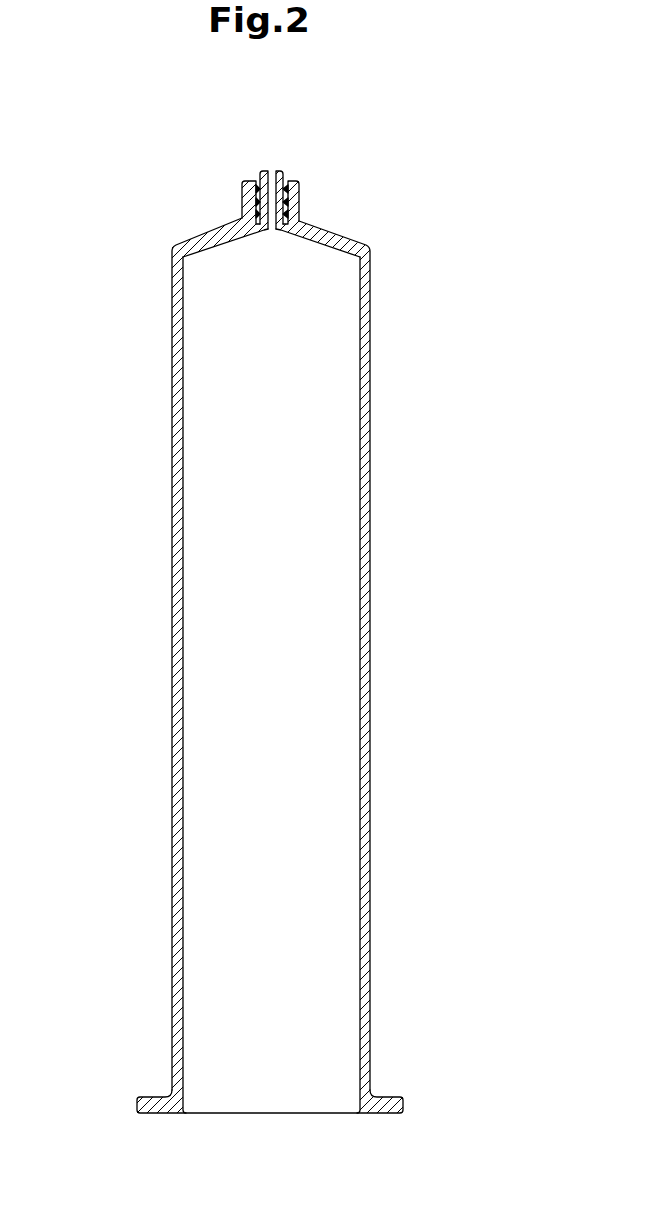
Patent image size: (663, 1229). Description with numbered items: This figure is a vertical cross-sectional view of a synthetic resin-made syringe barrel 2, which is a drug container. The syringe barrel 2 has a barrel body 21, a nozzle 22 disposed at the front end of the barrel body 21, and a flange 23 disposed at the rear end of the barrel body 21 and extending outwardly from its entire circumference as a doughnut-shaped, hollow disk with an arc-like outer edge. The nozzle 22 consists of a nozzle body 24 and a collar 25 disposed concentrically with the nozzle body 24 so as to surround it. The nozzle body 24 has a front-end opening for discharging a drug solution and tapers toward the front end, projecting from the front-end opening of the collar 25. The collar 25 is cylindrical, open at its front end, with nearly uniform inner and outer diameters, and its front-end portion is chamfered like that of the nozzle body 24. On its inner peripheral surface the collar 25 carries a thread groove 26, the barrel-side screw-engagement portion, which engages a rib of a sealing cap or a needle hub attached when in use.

The syringe barrel 2 is at (295, 632).
The barrel body 21 is at (370, 593).
The nozzle 22 is at (262, 203).
The flange 23 is at (389, 1097).
The nozzle body 24 is at (259, 174).
The collar 25 is at (303, 206).
The thread groove 26 is at (257, 214).